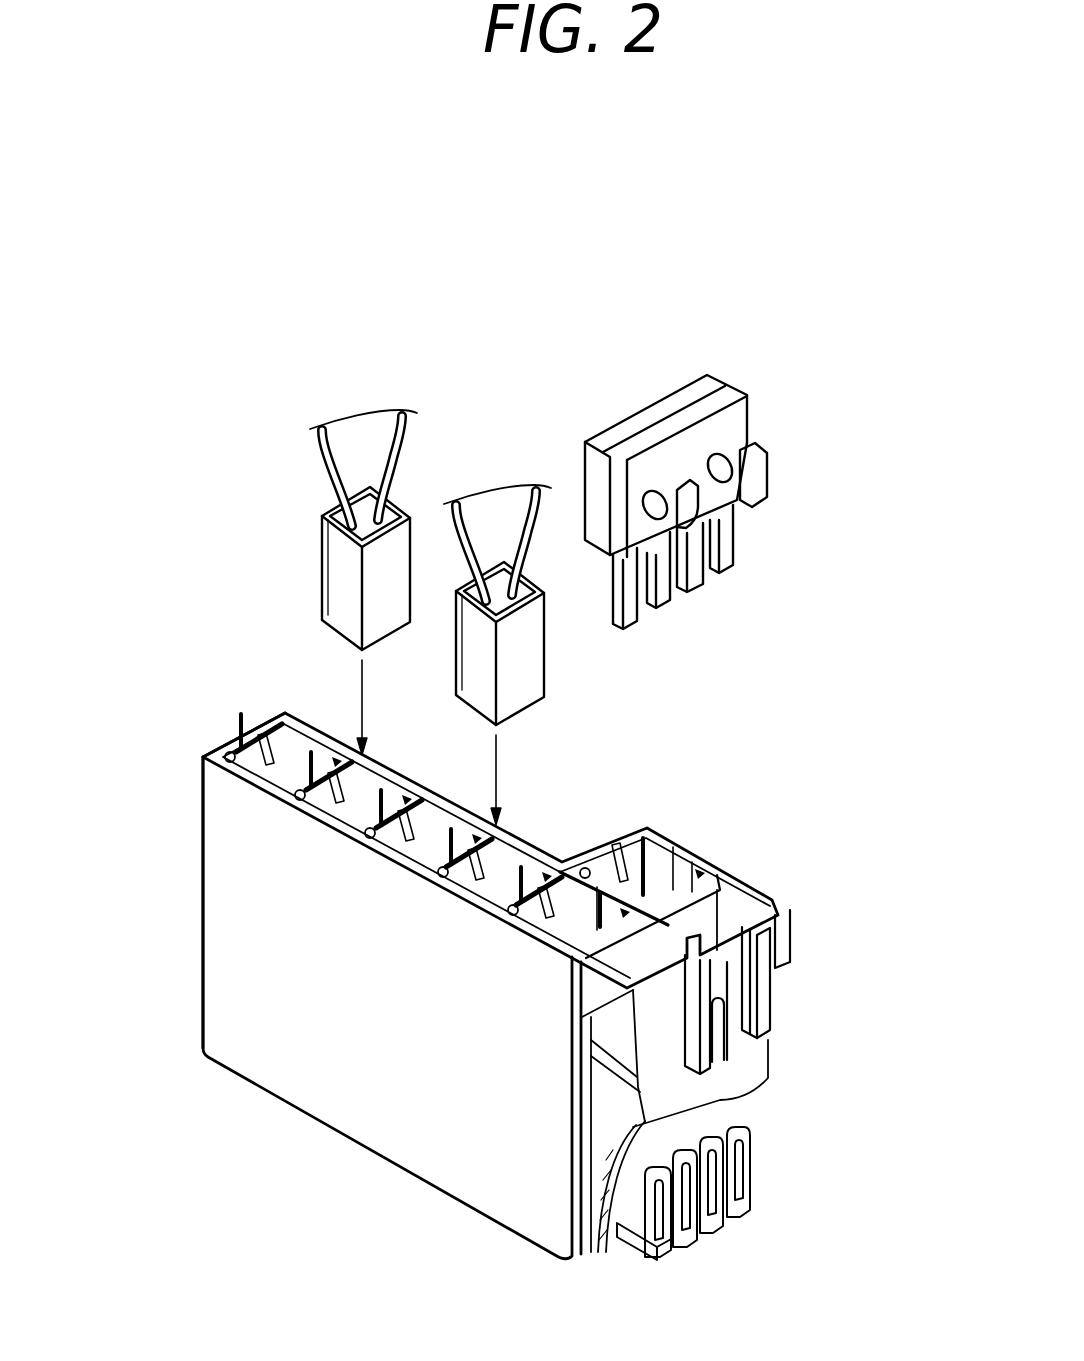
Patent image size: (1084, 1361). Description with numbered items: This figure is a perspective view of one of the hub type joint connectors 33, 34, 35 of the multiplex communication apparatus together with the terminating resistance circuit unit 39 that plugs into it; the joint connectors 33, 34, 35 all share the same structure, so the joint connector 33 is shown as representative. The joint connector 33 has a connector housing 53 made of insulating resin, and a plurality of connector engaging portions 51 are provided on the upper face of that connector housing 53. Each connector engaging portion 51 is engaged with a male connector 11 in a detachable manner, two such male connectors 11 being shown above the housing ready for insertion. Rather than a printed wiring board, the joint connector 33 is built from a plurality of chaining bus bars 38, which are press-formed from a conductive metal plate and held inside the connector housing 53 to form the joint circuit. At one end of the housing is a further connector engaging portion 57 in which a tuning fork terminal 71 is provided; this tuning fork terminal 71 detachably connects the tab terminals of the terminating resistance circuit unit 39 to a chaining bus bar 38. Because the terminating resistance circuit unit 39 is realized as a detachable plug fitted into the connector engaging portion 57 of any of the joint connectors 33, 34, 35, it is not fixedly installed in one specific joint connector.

The male connector 11 is at (378, 617).
The terminating resistance circuit unit 39 is at (788, 533).
The joint connector 33 is at (483, 968).
The joint connector 34 is at (483, 968).
The joint connector 35 is at (483, 968).
The connector engaging portion 51 is at (287, 712).
The connector housing 53 is at (250, 902).
The connector engaging portion 57 is at (727, 903).
The chaining bus bar 38 is at (688, 1267).
The tuning fork terminal 71 is at (750, 1137).